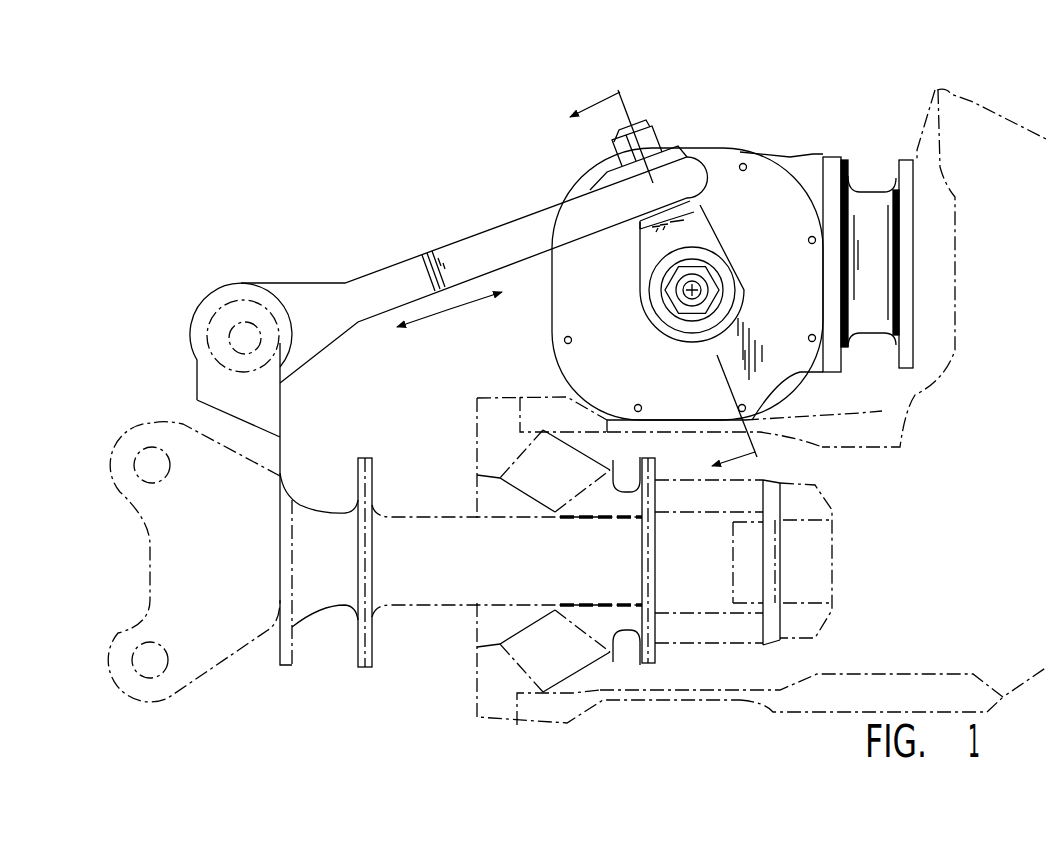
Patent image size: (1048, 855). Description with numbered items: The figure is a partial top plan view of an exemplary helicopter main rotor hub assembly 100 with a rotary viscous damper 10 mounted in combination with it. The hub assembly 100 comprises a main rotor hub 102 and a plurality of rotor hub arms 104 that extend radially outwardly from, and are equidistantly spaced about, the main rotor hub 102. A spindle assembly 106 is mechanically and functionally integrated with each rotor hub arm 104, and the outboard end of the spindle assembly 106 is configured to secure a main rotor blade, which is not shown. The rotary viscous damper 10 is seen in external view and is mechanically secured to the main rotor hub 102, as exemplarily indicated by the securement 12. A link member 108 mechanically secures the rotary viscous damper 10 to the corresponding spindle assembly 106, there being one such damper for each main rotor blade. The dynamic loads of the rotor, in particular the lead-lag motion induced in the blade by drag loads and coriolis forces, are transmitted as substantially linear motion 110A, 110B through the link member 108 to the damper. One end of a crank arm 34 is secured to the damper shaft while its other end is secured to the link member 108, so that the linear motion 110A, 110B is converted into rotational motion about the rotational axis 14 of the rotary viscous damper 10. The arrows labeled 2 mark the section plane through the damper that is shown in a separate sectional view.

The rotary viscous damper 10 is at (728, 130).
The mechanical securement of damper to main rotor hub 12 is at (866, 172).
The rotational axis 14 is at (703, 272).
The crank arm 34 is at (650, 237).
The section line for FIG. 2 is at (679, 274).
The main rotor hub assembly 100 is at (458, 724).
The main rotor hub 102 is at (1047, 389).
The rotor hub arm 104 is at (744, 703).
The spindle assembly 106 is at (222, 666).
The link member 108 is at (376, 284).
The linear motion 110A is at (411, 340).
The linear motion 110B is at (490, 313).